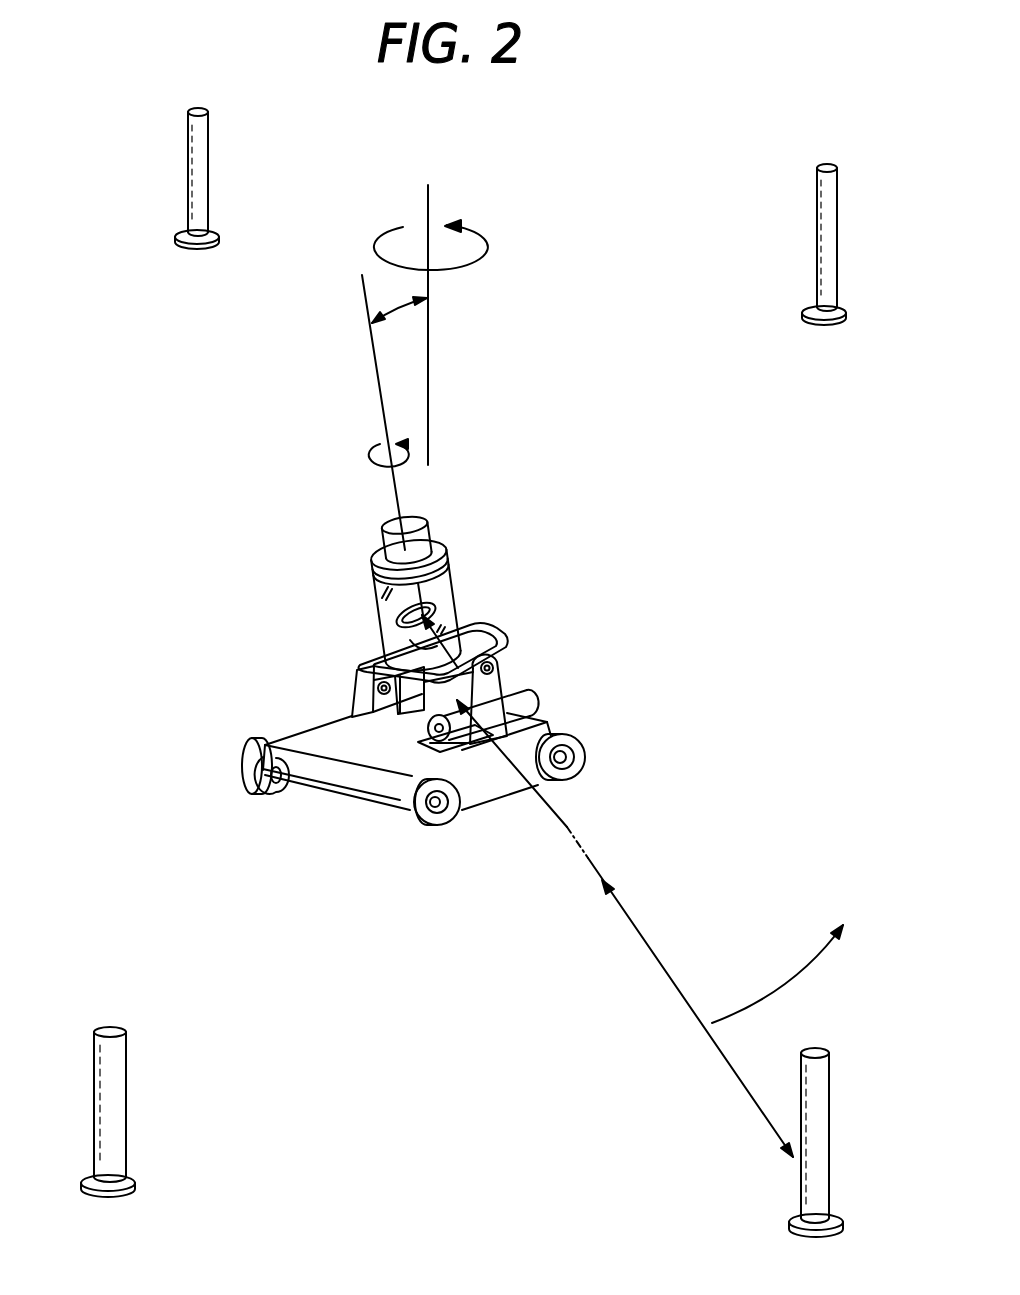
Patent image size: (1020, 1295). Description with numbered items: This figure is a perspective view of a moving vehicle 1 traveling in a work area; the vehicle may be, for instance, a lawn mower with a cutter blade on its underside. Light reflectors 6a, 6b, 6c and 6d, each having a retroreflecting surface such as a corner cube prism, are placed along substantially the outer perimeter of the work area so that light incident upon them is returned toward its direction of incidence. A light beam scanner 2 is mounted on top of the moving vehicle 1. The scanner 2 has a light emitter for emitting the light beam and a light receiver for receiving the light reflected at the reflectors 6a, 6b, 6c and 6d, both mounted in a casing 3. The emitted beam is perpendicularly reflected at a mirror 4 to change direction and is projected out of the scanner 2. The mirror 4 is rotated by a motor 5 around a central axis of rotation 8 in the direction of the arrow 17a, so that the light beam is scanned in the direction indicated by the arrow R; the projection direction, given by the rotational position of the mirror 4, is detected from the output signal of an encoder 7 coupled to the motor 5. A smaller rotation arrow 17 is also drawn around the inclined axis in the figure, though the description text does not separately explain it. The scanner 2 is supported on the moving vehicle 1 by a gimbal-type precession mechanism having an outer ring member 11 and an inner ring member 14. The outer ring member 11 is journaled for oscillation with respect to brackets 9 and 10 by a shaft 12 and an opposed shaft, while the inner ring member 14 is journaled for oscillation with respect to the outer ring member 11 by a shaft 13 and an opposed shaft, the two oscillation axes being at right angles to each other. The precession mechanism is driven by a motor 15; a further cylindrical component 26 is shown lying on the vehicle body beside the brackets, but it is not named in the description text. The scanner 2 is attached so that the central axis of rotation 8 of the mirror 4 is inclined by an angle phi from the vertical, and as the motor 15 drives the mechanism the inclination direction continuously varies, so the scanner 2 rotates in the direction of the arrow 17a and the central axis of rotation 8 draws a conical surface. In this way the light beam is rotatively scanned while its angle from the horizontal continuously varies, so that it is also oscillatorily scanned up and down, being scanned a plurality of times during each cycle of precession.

The moving vehicle 1 is at (401, 757).
The light beam scanner 2 is at (427, 573).
The casing 3 is at (410, 702).
The mirror 4 is at (397, 623).
The motor 5 is at (418, 582).
The light reflector 6a is at (208, 192).
The light reflector 6b is at (117, 1113).
The light reflector 6c is at (802, 1083).
The light reflector 6d is at (823, 233).
The encoder 7 is at (418, 510).
The central axis of rotation 8 is at (380, 400).
The bracket 9 is at (500, 682).
The bracket 10 is at (360, 693).
The outer ring member 11 is at (507, 645).
The shaft 12 is at (497, 670).
The shaft 13 is at (375, 705).
The inner ring member 14 is at (473, 627).
The motor 15 is at (430, 712).
The rotation about tilted axis 17 is at (416, 468).
The arrow 17a is at (487, 260).
The motor 26 is at (472, 740).
The arrow R is at (808, 960).